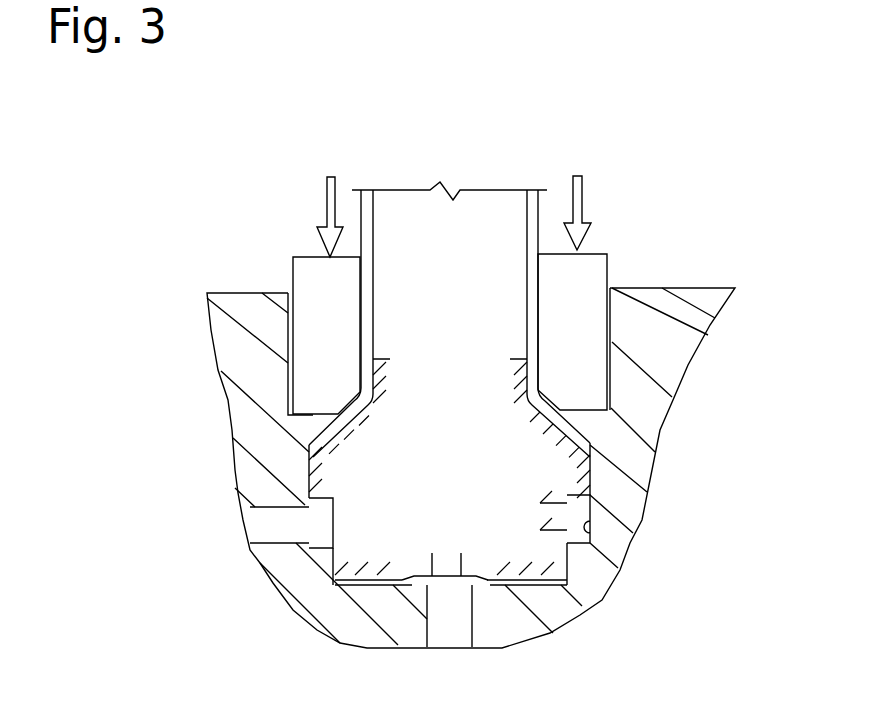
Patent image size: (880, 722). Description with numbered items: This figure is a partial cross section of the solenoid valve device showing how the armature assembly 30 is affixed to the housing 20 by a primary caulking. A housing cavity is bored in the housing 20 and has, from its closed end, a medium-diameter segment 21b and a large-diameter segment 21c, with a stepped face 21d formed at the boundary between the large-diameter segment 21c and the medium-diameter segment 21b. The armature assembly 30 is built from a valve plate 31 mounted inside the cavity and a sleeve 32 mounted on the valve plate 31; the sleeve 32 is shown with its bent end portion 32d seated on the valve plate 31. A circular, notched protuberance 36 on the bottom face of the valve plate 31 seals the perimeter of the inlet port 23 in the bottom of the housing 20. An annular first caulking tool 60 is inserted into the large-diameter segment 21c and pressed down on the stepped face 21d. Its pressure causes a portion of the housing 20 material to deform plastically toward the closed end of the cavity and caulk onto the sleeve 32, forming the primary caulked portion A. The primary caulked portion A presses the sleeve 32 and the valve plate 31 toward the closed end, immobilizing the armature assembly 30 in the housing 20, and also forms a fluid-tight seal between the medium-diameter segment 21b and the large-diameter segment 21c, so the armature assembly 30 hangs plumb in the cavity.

The armature assembly 30 is at (449, 298).
The sleeve 32 is at (449, 342).
The flared end portion of pipe 32d is at (340, 437).
The first caulking tool 60 is at (606, 253).
The housing 20 is at (469, 472).
The medium-diameter segment 21b is at (592, 543).
The large-diameter segment 21c is at (607, 358).
The stepped face 21d is at (312, 415).
The primary caulked portion A is at (600, 424).
The valve plate 31 is at (563, 478).
The circular, notched protuberance 36 is at (408, 600).
The inlet port 23 is at (448, 628).